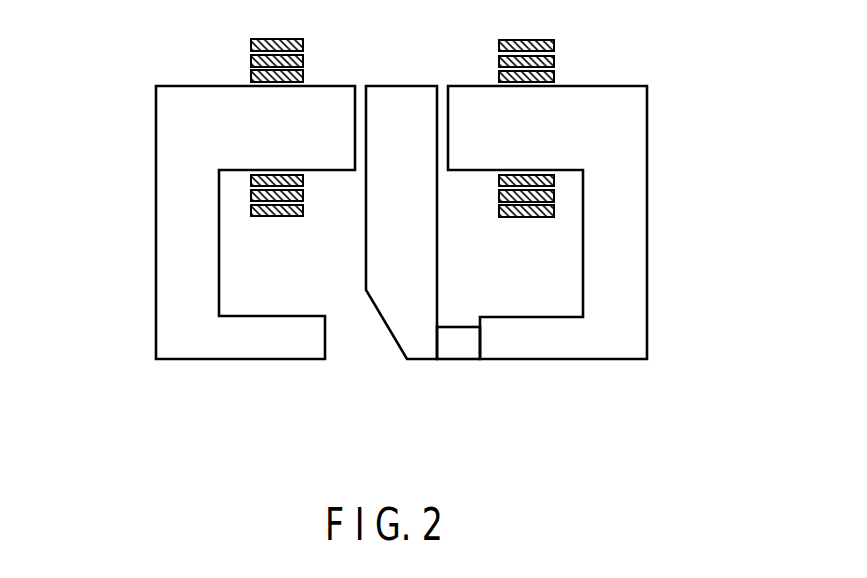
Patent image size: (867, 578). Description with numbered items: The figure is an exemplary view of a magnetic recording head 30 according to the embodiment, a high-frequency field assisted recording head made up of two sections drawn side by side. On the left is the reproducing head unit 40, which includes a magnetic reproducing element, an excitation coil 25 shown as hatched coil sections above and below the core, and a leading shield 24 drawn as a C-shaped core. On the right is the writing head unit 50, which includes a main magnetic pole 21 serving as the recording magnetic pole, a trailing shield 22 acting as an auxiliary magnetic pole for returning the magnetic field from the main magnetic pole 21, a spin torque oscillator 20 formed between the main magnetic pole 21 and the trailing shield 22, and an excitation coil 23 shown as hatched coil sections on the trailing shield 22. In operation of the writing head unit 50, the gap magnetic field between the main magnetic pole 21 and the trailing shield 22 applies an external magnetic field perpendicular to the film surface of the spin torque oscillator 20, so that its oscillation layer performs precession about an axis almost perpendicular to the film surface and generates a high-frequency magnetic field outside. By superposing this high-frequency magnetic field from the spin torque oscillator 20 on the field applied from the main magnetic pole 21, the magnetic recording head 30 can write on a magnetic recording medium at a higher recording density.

The magnetic recording head 30 is at (706, 87).
The reproducing head unit 40 is at (92, 60).
The leading shield 24 is at (170, 186).
The excitation coil 25 is at (250, 69).
The writing head unit 50 is at (612, 429).
The main magnetic pole 21 is at (403, 318).
The spin torque oscillator 20 is at (457, 366).
The trailing shield 22 is at (527, 350).
The excitation coil 23 is at (540, 217).